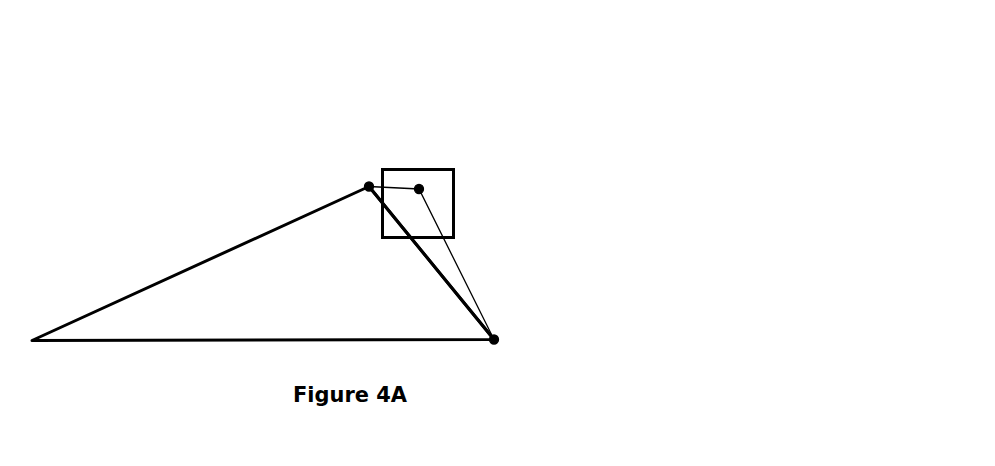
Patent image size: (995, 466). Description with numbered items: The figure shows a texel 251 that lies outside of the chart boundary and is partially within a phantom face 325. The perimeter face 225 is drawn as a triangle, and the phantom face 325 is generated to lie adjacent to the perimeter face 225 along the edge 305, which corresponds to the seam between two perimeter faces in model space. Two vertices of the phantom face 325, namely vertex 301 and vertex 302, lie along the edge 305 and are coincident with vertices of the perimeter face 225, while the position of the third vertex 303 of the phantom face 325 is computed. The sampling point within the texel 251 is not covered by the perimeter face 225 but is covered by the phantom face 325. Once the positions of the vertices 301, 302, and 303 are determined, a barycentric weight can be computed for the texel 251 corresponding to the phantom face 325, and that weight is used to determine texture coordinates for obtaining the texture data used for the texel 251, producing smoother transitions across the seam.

The perimeter face 225 is at (322, 300).
The texel 251 is at (442, 168).
The vertex 301 is at (369, 186).
The vertex 302 is at (494, 340).
The vertex 303 is at (419, 189).
The edge 305 is at (443, 273).
The phantom face 325 is at (418, 227).